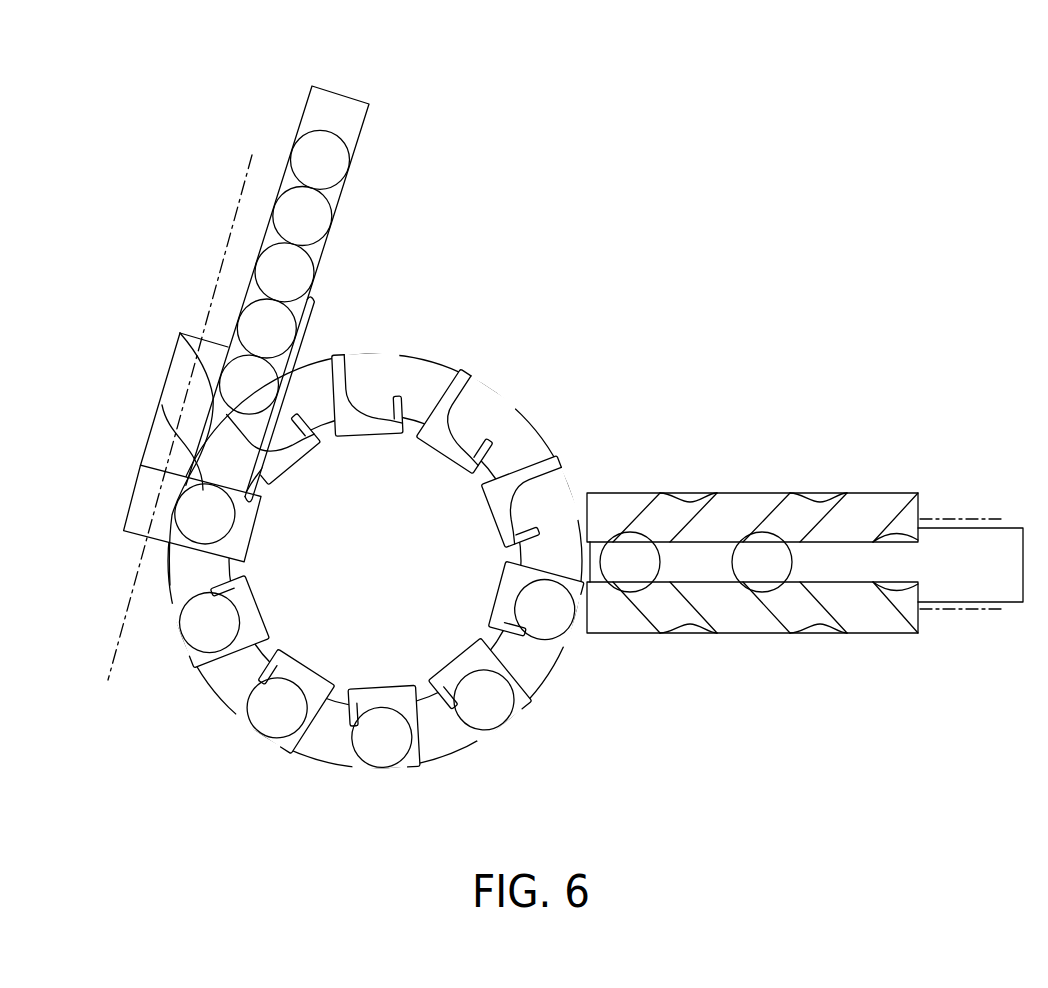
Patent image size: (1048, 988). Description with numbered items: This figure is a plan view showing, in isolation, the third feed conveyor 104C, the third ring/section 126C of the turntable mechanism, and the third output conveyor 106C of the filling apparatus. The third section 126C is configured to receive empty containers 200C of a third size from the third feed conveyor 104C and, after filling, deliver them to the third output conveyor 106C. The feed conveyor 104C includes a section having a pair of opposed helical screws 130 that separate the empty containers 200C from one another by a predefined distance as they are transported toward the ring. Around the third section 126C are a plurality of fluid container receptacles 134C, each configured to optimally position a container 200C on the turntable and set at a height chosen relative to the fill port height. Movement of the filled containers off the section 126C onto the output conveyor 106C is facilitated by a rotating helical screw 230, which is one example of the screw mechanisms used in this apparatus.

The third output conveyor 106C is at (335, 110).
The rotating helical screw 230 is at (167, 463).
The empty containers 200C is at (203, 517).
The opposed helical screws 130 is at (740, 508).
The third feed conveyor 104C is at (968, 560).
The third fluid container receptacle 134C is at (527, 702).
The third section 126C is at (447, 738).